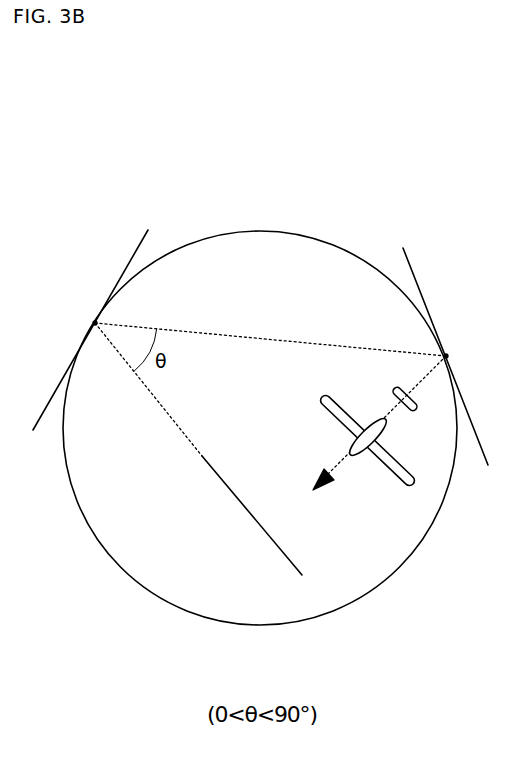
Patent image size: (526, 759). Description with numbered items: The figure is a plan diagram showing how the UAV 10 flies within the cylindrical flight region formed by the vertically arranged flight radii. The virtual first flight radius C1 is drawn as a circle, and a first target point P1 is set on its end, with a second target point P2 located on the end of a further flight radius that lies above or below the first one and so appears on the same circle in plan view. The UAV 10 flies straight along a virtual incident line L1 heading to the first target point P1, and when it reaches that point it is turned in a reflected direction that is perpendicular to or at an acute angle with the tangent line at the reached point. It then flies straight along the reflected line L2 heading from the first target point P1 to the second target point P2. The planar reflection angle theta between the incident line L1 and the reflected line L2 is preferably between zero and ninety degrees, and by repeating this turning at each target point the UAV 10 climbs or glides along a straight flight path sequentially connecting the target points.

The UAV 10 is at (383, 467).
The virtual incident line L1 is at (202, 456).
The reflected line L2 is at (276, 340).
The first flight radius C1 is at (291, 231).
The first target point P1 is at (82, 314).
The second target point P2 is at (460, 354).